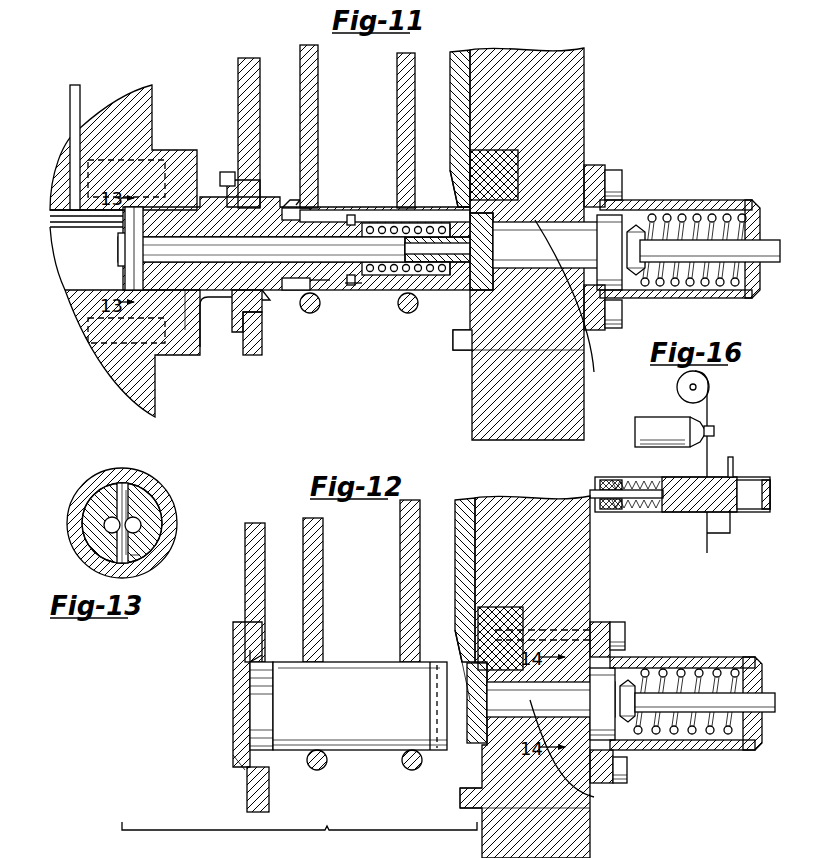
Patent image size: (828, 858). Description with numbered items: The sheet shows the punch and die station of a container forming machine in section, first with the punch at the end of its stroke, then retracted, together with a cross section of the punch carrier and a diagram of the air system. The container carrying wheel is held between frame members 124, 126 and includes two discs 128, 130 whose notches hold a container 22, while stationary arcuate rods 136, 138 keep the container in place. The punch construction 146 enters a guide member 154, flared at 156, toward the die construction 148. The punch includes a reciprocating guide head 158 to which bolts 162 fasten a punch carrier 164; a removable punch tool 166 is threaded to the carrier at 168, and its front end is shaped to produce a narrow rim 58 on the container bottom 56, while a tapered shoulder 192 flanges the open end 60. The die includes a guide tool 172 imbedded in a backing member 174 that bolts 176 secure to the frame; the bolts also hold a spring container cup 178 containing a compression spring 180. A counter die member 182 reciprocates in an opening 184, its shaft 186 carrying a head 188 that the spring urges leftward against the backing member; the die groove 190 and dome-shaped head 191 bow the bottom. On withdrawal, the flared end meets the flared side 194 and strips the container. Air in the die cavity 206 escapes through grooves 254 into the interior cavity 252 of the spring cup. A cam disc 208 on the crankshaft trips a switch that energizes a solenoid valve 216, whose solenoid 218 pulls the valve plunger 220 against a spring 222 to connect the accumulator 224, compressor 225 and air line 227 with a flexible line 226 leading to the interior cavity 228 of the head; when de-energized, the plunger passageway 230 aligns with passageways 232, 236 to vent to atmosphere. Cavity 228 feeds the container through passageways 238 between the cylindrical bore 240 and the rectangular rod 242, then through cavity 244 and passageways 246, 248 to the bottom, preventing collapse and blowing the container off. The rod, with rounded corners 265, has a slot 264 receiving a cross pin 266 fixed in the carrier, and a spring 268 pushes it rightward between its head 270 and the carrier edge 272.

In FIG. 11, the container 22 is at (350, 213).
In FIG. 12, the container 22 is at (348, 667).
In FIG. 11, the bottom of the container 56 is at (486, 232).
In FIG. 12, the bottom of the container 56 is at (437, 692).
In FIG. 11, the narrow rim 58 is at (458, 168).
In FIG. 12, the narrow rim 58 is at (462, 660).
In FIG. 11, the open end 60 is at (305, 185).
In FIG. 12, the open end 60 is at (272, 660).
In FIG. 11, the frame member 124 is at (462, 60).
In FIG. 12, the frame member 124 is at (462, 512).
In FIG. 11, the frame member 126 is at (252, 60).
In FIG. 12, the frame member 126 is at (253, 532).
In FIG. 11, the disc 128 is at (397, 97).
In FIG. 12, the disc 128 is at (400, 539).
In FIG. 11, the disc 130 is at (318, 75).
In FIG. 12, the disc 130 is at (322, 535).
In FIG. 11, the container retaining arcuate stationary rod 136 is at (400, 311).
In FIG. 12, the container retaining arcuate stationary rod 136 is at (410, 771).
In FIG. 11, the container retaining arcuate stationary rod 138 is at (306, 314).
In FIG. 12, the container retaining arcuate stationary rod 138 is at (320, 770).
In FIG. 11, the punch construction 146 is at (352, 170).
In FIG. 11, the die construction 148 is at (507, 185).
In FIG. 12, the die construction 148 is at (447, 608).
In FIG. 11, the guide member 154 is at (252, 185).
In FIG. 12, the guide member 154 is at (268, 760).
In FIG. 11, the flare of guide member 156 is at (222, 182).
In FIG. 12, the flare of guide member 156 is at (234, 760).
In FIG. 11, the guide head 158 is at (140, 95).
In FIG. 13, the guide head 158 is at (145, 474).
In FIG. 11, the bolt 162 is at (155, 142).
In FIG. 11, the punch carrier 164 is at (205, 300).
In FIG. 13, the punch carrier 164 is at (162, 536).
In FIG. 11, the punch tool 166 is at (407, 228).
In FIG. 11, the threaded attachment 168 is at (372, 215).
In FIG. 11, the guide tool 172 is at (475, 365).
In FIG. 12, the guide tool 172 is at (484, 830).
In FIG. 11, the backing member 174 is at (575, 86).
In FIG. 12, the backing member 174 is at (585, 568).
In FIG. 11, the bolt 176 is at (622, 170).
In FIG. 12, the bolt 176 is at (620, 622).
In FIG. 11, the spring container cup 178 is at (740, 298).
In FIG. 12, the spring container cup 178 is at (690, 750).
In FIG. 11, the compression spring 180 is at (722, 214).
In FIG. 12, the compression spring 180 is at (727, 668).
In FIG. 11, the counter die member 182 is at (520, 222).
In FIG. 12, the counter die member 182 is at (470, 712).
In FIG. 11, the opening 184 is at (582, 328).
In FIG. 12, the opening 184 is at (551, 732).
In FIG. 11, the shaft 186 is at (583, 166).
In FIG. 12, the shaft 186 is at (556, 709).
In FIG. 11, the head 188 is at (622, 208).
In FIG. 12, the head 188 is at (618, 668).
In FIG. 11, the die groove 190 is at (455, 325).
In FIG. 12, the die groove 190 is at (484, 660).
In FIG. 12, the dome-shaped head 191 is at (470, 665).
In FIG. 11, the tapered shoulder 192 is at (288, 204).
In FIG. 11, the flared side 194 is at (266, 300).
In FIG. 12, the flared side 194 is at (265, 650).
In FIG. 12, the die cavity 206 is at (462, 796).
In FIG. 12, the cam disc 208 is at (299, 840).
In FIG. 16, the solenoid valve 216 is at (755, 474).
In FIG. 16, the solenoid 218 is at (612, 512).
In FIG. 16, the valve plunger 220 is at (665, 505).
In FIG. 16, the compression spring 222 is at (640, 478).
In FIG. 16, the compressed air accumulator 224 is at (650, 421).
In FIG. 16, the air compressor 225 is at (709, 380).
In FIG. 11, the flexible air line 226 is at (70, 104).
In FIG. 16, the flexible air line 226 is at (705, 540).
In FIG. 16, the compressed air line 227 is at (712, 445).
In FIG. 11, the interior cavity 228 is at (65, 262).
In FIG. 16, the plunger passageway 230 is at (700, 500).
In FIG. 16, the passageway 232 is at (732, 533).
In FIG. 16, the discharge passageway 236 is at (734, 459).
In FIG. 11, the passageway 238 is at (185, 292).
In FIG. 13, the passageway 238 is at (135, 510).
In FIG. 11, the cylindrical bore 240 is at (225, 302).
In FIG. 13, the cylindrical bore 240 is at (140, 525).
In FIG. 12, the cylindrical bore 240 is at (258, 789).
In FIG. 11, the rectangular rod 242 is at (248, 254).
In FIG. 13, the rectangular rod 242 is at (110, 490).
In FIG. 11, the cavity 244 is at (425, 234).
In FIG. 11, the passageway 246 is at (468, 250).
In FIG. 11, the passageway 248 is at (426, 275).
In FIG. 11, the interior cavity 252 is at (688, 282).
In FIG. 12, the interior cavity 252 is at (680, 740).
In FIG. 11, the groove 254 is at (581, 304).
In FIG. 12, the groove 254 is at (583, 758).
In FIG. 11, the slot 264 is at (118, 246).
In FIG. 13, the slot 264 is at (105, 528).
In FIG. 13, the rounded corner 265 is at (148, 556).
In FIG. 11, the cross pin 266 is at (126, 278).
In FIG. 13, the cross pin 266 is at (132, 492).
In FIG. 11, the compression spring 268 is at (372, 272).
In FIG. 11, the head 270 is at (436, 278).
In FIG. 11, the edge of punch carrier 272 is at (368, 268).